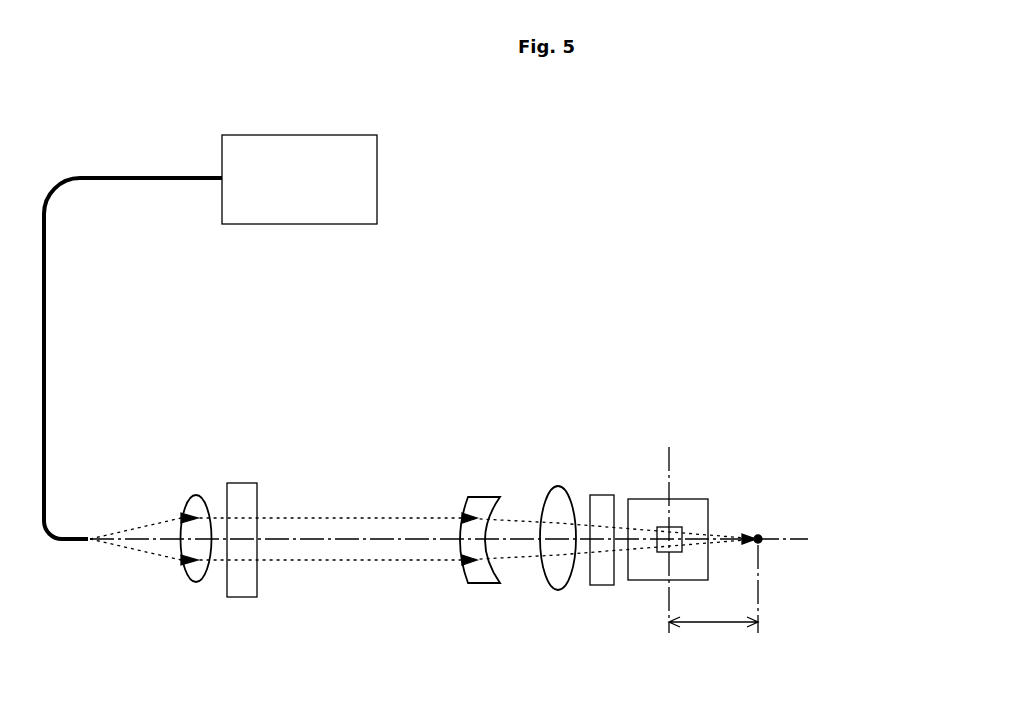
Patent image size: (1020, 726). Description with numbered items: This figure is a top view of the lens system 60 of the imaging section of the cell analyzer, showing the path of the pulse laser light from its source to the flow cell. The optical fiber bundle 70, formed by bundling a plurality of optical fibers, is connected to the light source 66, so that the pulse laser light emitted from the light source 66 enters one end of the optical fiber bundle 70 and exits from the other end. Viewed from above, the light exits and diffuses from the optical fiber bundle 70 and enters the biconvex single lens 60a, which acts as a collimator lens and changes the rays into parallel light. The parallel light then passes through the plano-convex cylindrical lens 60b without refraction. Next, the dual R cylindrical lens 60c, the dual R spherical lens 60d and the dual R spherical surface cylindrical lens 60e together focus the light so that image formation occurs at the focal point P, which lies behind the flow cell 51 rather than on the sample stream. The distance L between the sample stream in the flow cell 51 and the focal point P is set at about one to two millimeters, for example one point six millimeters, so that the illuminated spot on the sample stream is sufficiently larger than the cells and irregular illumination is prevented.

The light source 66 is at (313, 134).
The optical fiber bundle 70 is at (44, 348).
The lens system 60 is at (439, 388).
The biconvex single lens 60a is at (197, 583).
The plano-convex cylindrical lens 60b is at (243, 597).
The dual R cylindrical lens 60c is at (480, 583).
The dual R spherical lens 60d is at (555, 590).
The dual R spherical surface cylindrical lens 60e is at (603, 585).
The flow cell 51 is at (690, 499).
The focal point P is at (763, 533).
The distance L is at (713, 636).